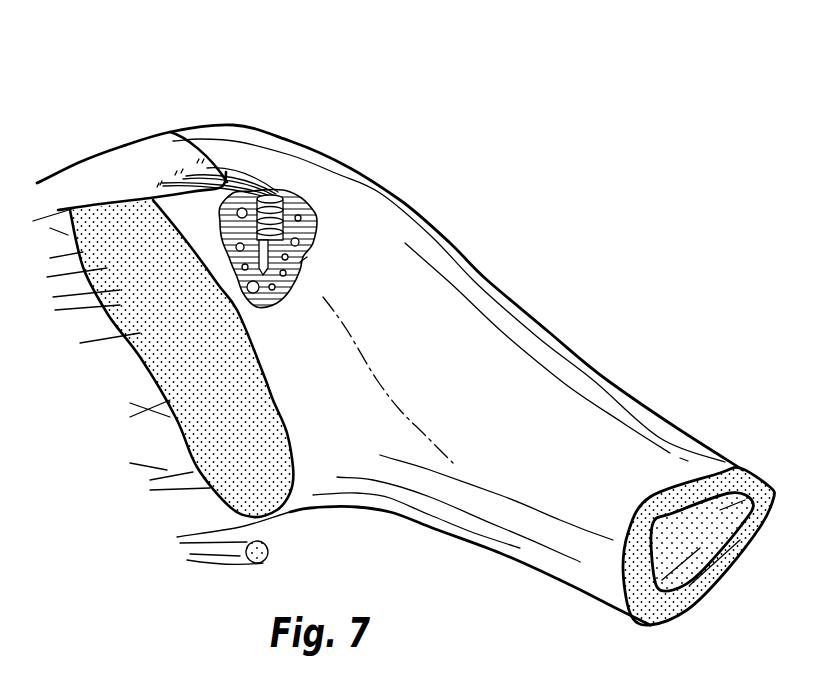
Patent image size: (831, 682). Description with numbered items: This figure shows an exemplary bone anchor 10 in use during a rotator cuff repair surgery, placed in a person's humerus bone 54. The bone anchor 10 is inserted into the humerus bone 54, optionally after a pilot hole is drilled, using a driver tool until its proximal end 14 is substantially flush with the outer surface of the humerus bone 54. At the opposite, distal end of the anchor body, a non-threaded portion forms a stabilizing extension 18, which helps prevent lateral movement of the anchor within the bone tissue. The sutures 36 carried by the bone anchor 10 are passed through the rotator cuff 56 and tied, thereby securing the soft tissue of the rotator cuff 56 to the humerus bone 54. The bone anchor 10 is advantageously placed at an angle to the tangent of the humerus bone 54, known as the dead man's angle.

The bone anchor 10 is at (288, 228).
The proximal end 14 is at (283, 193).
The stabilizing extension 18 is at (307, 257).
The sutures 36 is at (233, 174).
The humerus bone 54 is at (460, 330).
The rotator cuff 56 is at (172, 158).